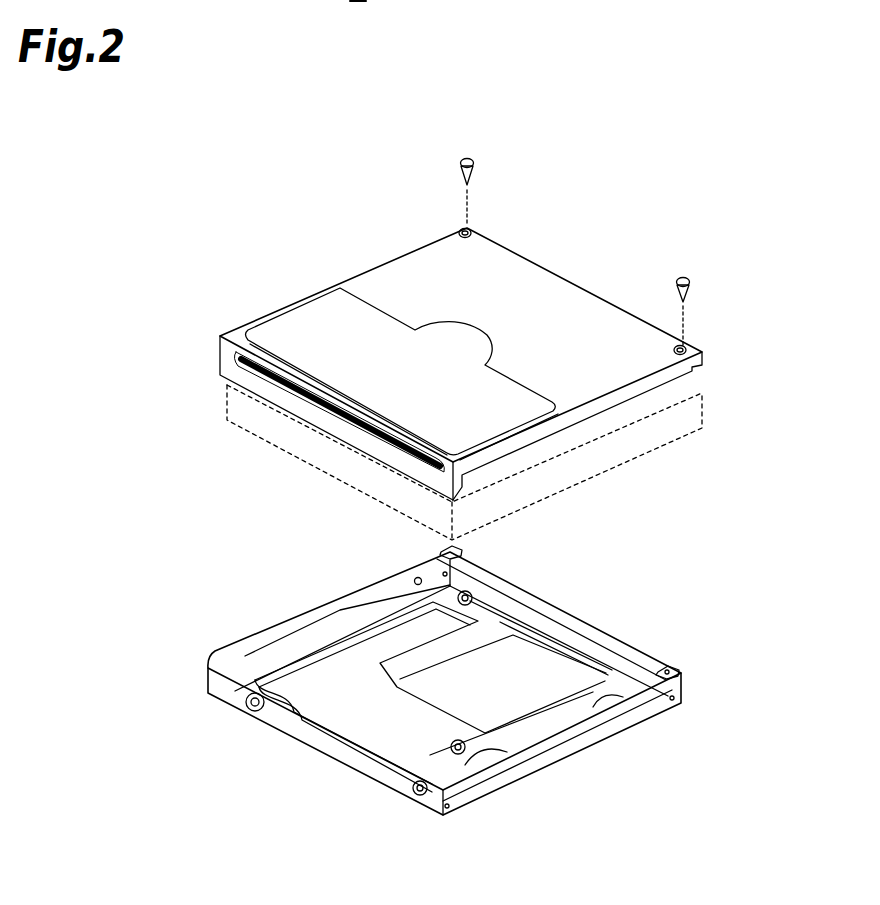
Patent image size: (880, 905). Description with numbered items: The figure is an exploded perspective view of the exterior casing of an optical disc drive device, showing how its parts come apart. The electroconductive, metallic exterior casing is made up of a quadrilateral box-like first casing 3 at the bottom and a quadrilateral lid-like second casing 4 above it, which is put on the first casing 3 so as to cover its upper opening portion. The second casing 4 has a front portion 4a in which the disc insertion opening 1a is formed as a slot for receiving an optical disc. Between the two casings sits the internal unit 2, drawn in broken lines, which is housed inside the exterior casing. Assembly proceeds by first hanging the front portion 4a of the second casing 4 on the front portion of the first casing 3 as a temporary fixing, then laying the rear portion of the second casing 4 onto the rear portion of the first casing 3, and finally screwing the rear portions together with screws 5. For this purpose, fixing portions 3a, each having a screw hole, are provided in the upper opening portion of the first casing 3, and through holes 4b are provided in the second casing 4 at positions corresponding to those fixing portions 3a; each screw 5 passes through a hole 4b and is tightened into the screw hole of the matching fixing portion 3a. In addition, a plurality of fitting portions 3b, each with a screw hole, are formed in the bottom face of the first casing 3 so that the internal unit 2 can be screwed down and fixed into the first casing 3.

The disc insertion opening 1a is at (265, 378).
The internal unit 2 is at (643, 447).
The first casing 3 is at (577, 740).
The fixing portion 3a is at (445, 552).
The fitting portion 3b is at (470, 594).
The second casing 4 is at (307, 328).
The front portion 4a is at (218, 362).
The through hole 4b is at (457, 226).
The screw 5 is at (462, 162).